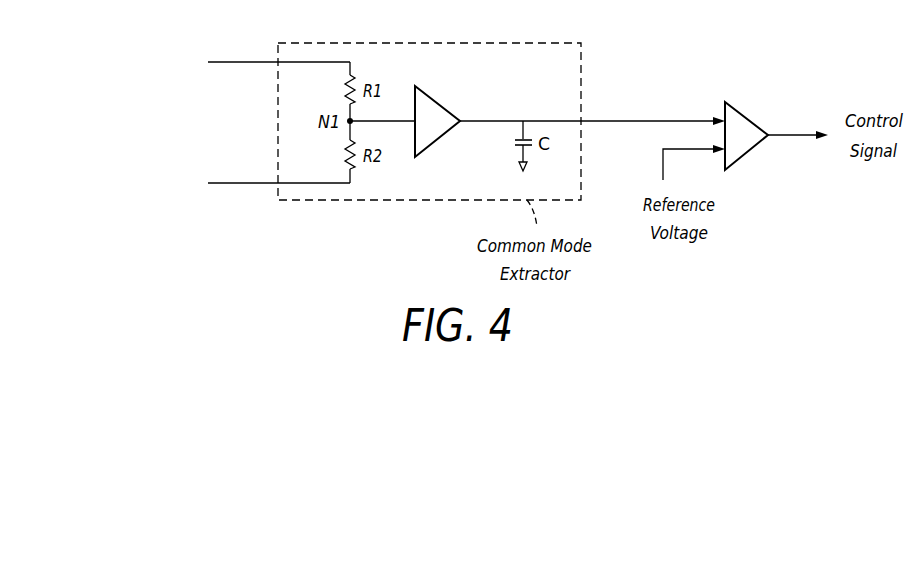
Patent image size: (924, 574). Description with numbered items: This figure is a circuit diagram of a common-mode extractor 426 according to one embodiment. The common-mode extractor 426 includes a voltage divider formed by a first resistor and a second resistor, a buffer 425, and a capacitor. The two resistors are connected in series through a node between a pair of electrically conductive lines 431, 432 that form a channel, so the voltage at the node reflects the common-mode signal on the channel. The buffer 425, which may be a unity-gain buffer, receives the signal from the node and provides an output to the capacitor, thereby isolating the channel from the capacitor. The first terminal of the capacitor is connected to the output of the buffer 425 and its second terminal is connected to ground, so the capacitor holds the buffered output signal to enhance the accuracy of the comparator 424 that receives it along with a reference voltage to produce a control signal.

The comparator 424 is at (750, 117).
The buffer 425 is at (437, 100).
The common-mode extractor 426 is at (527, 43).
The electrically conductive line 431 is at (232, 72).
The electrically conductive line 432 is at (232, 193).